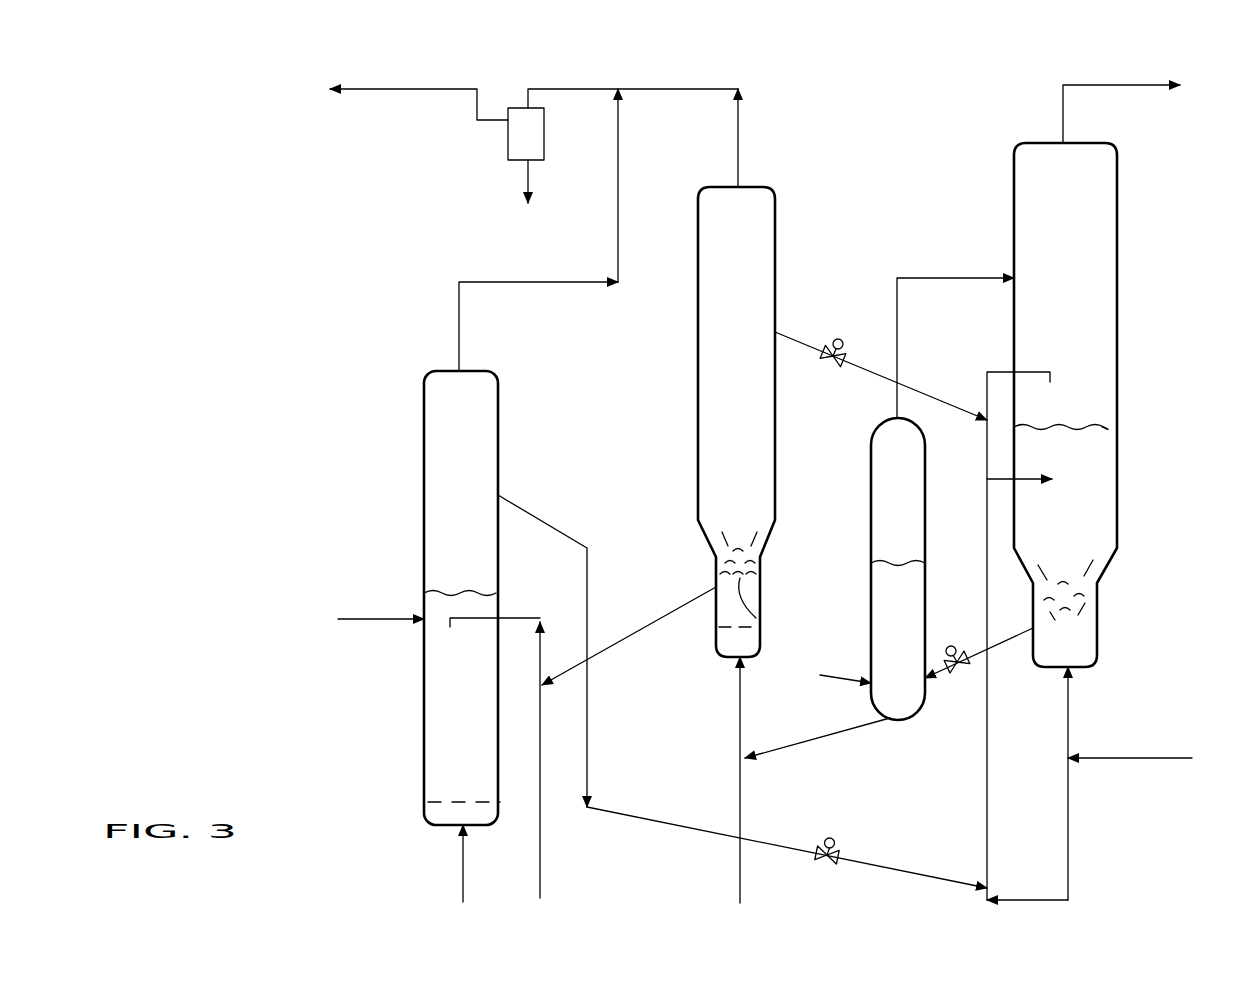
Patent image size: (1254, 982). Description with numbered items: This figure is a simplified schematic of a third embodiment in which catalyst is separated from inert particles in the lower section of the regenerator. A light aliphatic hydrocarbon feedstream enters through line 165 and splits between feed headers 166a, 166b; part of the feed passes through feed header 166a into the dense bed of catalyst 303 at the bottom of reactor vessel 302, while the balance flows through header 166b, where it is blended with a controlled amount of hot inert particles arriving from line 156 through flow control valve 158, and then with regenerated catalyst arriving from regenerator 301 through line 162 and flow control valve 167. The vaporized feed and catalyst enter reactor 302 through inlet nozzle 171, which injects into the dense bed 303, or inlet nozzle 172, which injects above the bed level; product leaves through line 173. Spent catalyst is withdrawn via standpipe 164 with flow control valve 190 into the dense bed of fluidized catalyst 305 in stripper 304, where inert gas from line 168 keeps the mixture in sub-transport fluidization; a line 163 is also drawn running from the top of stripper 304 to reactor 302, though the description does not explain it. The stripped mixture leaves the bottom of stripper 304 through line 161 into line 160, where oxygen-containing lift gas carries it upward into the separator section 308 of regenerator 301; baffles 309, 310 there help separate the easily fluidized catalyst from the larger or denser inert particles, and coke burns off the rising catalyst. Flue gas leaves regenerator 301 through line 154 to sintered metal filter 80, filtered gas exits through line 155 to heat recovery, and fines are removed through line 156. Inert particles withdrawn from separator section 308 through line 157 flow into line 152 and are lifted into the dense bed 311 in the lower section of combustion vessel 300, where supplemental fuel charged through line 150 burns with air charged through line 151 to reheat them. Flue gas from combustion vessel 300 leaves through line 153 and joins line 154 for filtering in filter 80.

The sintered metal filter 80 is at (539, 141).
The line 150 is at (376, 616).
The line 151 is at (462, 873).
The line 152 is at (541, 848).
The line 153 is at (542, 282).
The line 154 is at (738, 128).
The line 155 is at (443, 88).
The line 156 is at (527, 180).
The line 157 is at (612, 645).
The flow control valve 158 is at (834, 842).
The line 160 is at (741, 868).
The line 161 is at (823, 740).
The line 162 is at (792, 336).
The vapor line 163 is at (898, 326).
The standpipe 164 is at (948, 675).
The line 165 is at (1150, 758).
The feed header 166a is at (1069, 712).
The feed header 166b is at (1069, 850).
The flow control valve 167 is at (826, 365).
The line 168 is at (834, 664).
The inlet nozzle 171 is at (992, 479).
The inlet nozzle 172 is at (990, 372).
The line 173 is at (1090, 84).
The flow control valve 190 is at (948, 654).
The combustion vessel 300 is at (481, 545).
The regenerator 301 is at (748, 388).
The reactor vessel 302 is at (1117, 321).
The dense bed of catalyst 303 is at (1080, 542).
The stripper 304 is at (871, 483).
The dense bed of fluidized catalyst 305 is at (918, 625).
The separator section 308 is at (758, 573).
The baffle 309 is at (757, 618).
The baffle 310 is at (757, 585).
The dense bed 311 is at (431, 704).